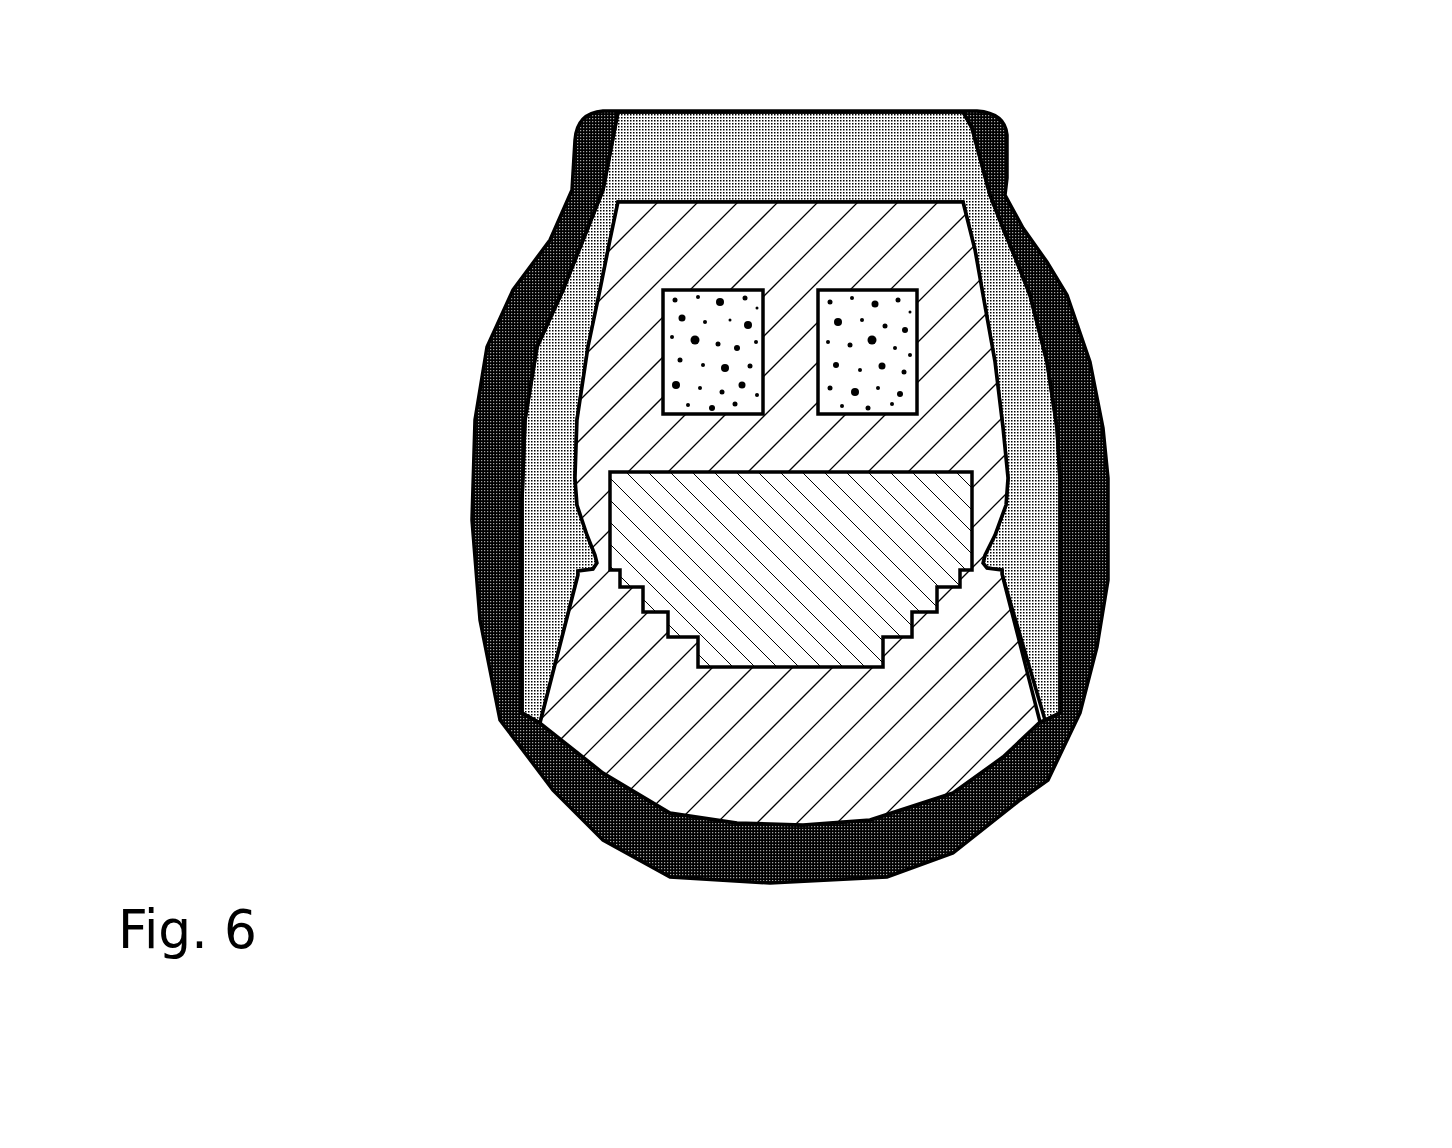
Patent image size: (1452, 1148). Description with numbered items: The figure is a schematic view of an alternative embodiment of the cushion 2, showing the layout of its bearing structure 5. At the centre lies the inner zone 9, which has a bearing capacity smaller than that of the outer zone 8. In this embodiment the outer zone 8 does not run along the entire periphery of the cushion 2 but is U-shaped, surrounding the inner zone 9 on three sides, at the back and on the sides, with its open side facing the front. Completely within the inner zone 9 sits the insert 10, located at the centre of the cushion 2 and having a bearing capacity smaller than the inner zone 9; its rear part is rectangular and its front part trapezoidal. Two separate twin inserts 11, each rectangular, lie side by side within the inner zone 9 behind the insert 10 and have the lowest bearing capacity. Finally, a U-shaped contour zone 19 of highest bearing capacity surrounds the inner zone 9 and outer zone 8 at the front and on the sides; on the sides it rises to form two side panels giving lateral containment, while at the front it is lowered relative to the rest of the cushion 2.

The cushion 2 is at (311, 492).
The bearing structure 5 is at (1338, 865).
The outer zone 8 is at (793, 162).
The inner zone 9 is at (750, 437).
The insert 10 is at (760, 537).
The twin inserts 11 is at (710, 345).
The contour zone 19 is at (492, 333).